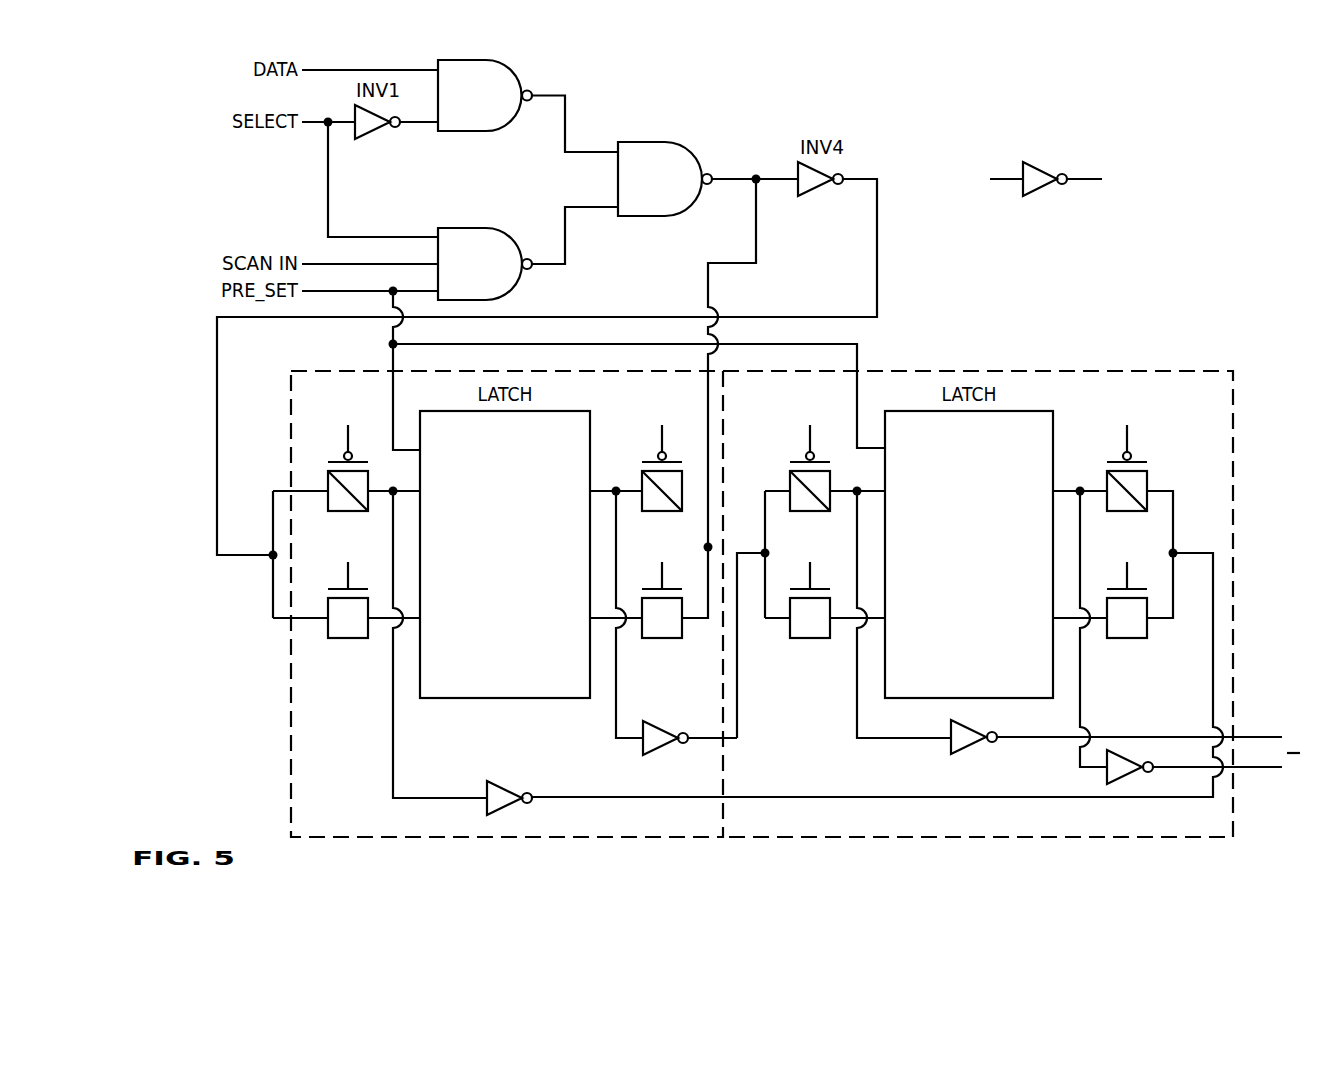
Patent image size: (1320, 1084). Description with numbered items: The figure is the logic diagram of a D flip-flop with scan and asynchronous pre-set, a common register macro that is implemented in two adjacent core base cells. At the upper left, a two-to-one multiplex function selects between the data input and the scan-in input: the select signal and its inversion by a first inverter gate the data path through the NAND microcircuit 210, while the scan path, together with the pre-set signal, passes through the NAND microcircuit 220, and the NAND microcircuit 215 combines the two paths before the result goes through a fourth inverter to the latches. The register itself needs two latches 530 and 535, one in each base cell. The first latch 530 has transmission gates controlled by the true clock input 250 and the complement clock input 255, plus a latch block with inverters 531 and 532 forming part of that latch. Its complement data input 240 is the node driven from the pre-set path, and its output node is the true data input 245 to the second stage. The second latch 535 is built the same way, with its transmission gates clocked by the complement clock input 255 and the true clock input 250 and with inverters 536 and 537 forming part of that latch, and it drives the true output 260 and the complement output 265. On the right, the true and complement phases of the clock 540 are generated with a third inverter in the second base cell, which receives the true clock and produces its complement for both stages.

The NAND microcircuit 210 is at (484, 131).
The NAND microcircuit 215 is at (660, 142).
The NAND microcircuit 220 is at (484, 228).
The PDC 240 is at (243, 559).
The PDT 245 is at (704, 546).
The PCO 250 is at (737, 537).
The PCN 255 is at (737, 537).
The Q 260 is at (1258, 736).
The QBAR 265 is at (1258, 768).
The latch 530 is at (562, 371).
The inverter 531 is at (504, 789).
The inverter 532 is at (660, 729).
The latch 535 is at (990, 371).
The inverter 536 is at (968, 745).
The inverter 537 is at (1127, 756).
The clock 540 is at (1042, 166).